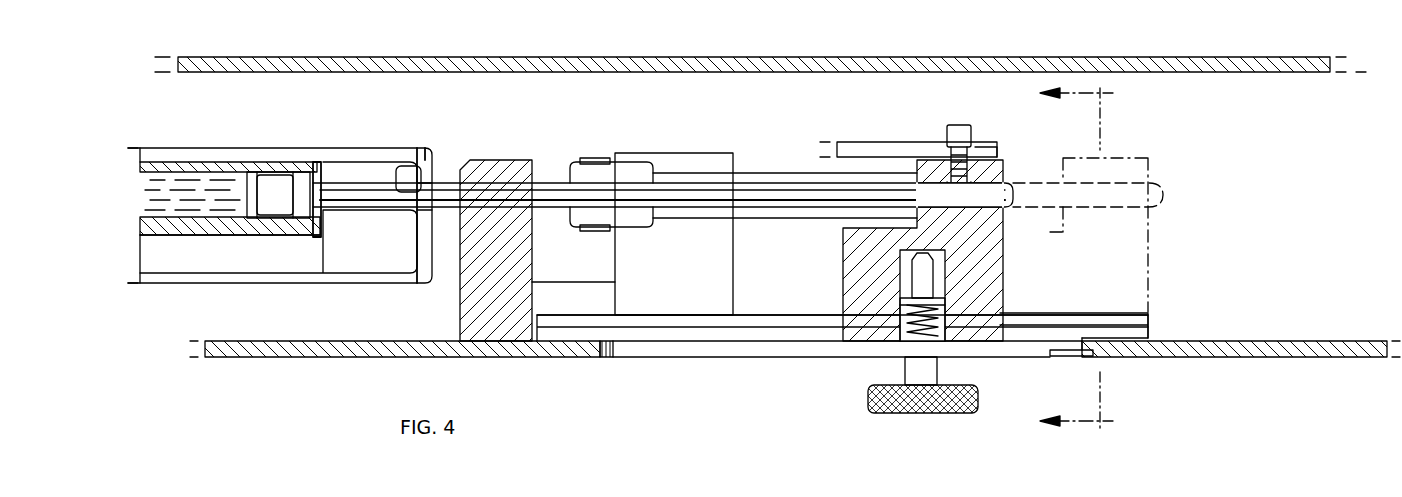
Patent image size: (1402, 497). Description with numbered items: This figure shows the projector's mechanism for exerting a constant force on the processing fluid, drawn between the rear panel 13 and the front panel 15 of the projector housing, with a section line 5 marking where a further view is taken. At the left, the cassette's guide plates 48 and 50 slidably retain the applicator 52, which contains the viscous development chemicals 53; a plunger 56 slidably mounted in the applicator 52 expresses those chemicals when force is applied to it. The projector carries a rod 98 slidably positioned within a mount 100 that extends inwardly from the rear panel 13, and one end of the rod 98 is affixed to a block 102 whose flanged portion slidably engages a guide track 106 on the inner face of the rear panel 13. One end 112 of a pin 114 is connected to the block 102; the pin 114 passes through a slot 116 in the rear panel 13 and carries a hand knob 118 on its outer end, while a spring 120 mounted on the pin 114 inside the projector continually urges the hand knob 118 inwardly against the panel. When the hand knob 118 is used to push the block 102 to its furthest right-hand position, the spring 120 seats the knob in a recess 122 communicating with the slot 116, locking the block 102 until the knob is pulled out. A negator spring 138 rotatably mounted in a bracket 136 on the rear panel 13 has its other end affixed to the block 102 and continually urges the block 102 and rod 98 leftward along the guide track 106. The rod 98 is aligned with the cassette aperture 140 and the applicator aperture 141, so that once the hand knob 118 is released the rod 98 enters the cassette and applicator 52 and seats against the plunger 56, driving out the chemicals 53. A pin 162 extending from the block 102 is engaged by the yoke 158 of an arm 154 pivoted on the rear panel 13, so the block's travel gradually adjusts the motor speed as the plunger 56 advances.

The rear panel 13 is at (335, 350).
The front panel 15 is at (437, 57).
The guide plate 48 is at (212, 150).
The guide plate 50 is at (345, 228).
The applicator 52 is at (172, 163).
The viscous development chemicals 53 is at (180, 205).
The plunger 56 is at (277, 185).
The rod 98 is at (447, 190).
The mount 100 is at (460, 298).
The block 102 is at (843, 252).
The guide track 106 is at (1150, 330).
The end of pin 112 is at (930, 258).
The pin 114 is at (905, 325).
The slot 116 is at (725, 348).
The hand knob 118 is at (935, 405).
The spring 120 is at (900, 313).
The recess 122 is at (1085, 360).
The bracket 136 is at (595, 162).
The negator spring 138 is at (778, 172).
The aperture 140 is at (397, 178).
The aperture 141 is at (316, 160).
The arm 154 is at (893, 147).
The yoke 158 is at (985, 148).
The pin 162 is at (972, 127).
The section line 5- 5 is at (1084, 259).